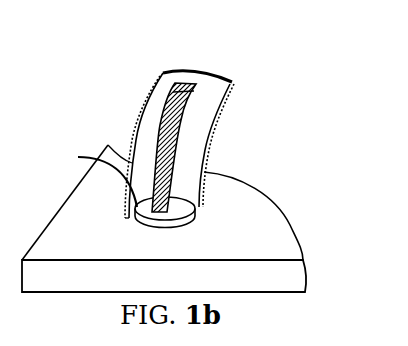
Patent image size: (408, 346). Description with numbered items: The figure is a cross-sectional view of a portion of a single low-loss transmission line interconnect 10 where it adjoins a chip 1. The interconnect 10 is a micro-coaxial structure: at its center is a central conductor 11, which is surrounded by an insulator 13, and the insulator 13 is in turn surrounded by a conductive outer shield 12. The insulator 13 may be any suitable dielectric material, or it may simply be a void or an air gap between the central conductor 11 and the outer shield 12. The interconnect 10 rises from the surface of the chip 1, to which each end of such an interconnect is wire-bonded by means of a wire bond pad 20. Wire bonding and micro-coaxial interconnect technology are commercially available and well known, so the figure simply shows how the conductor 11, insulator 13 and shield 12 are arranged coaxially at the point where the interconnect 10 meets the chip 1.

The chip 1 is at (268, 213).
The low-loss transmission line interconnect 10 is at (204, 115).
The central conductor 11 is at (163, 133).
The conductive outer shield 12 is at (225, 97).
The insulator 13 is at (167, 83).
The wire bond pad 20 is at (95, 176).